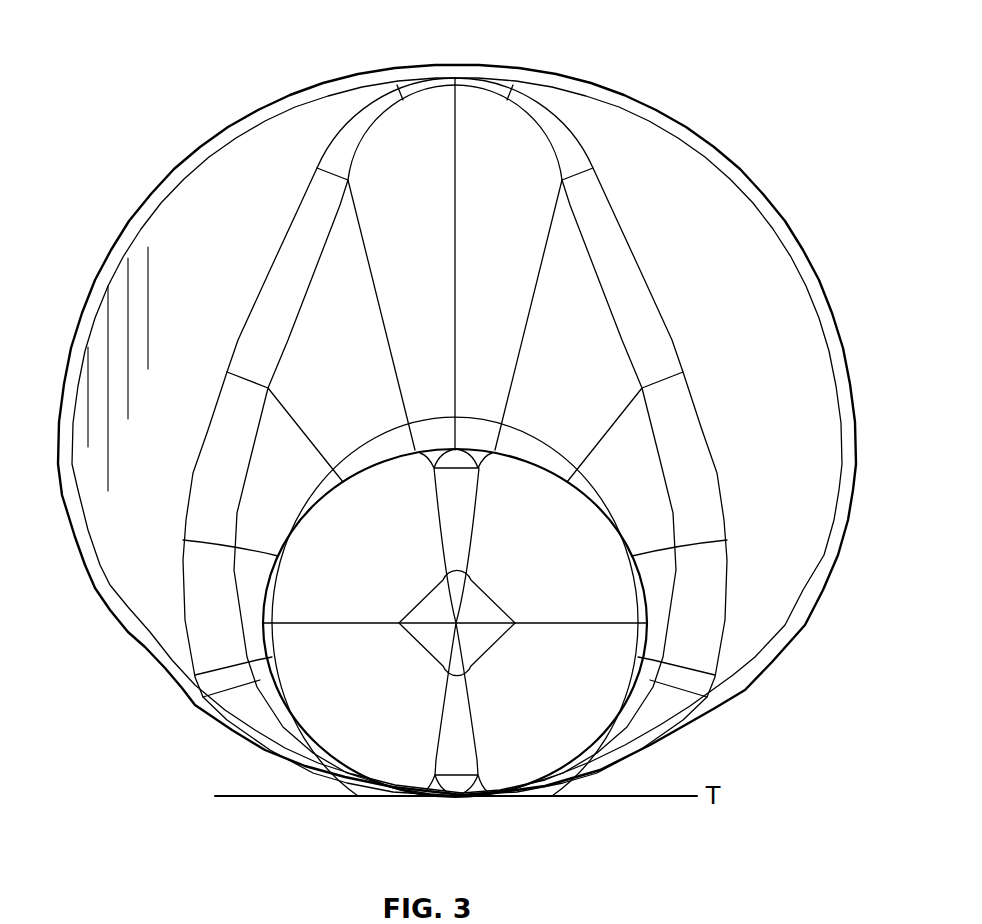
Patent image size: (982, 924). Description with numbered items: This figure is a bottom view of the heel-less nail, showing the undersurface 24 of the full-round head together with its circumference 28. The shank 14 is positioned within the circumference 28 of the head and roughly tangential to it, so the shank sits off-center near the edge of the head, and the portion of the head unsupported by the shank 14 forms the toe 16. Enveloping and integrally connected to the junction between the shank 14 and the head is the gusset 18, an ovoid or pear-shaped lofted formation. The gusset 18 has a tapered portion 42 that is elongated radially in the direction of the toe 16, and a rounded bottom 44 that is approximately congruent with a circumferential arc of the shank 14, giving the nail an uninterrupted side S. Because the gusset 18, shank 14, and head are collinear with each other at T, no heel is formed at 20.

The shank 14 is at (566, 713).
The toe 16 is at (265, 152).
The gusset 18 is at (563, 250).
The heel 20 is at (457, 798).
The bottom surface 24 is at (747, 250).
The circumference 28 is at (840, 330).
The tapered portion 42 is at (482, 115).
The rounded bottom 44 is at (398, 764).